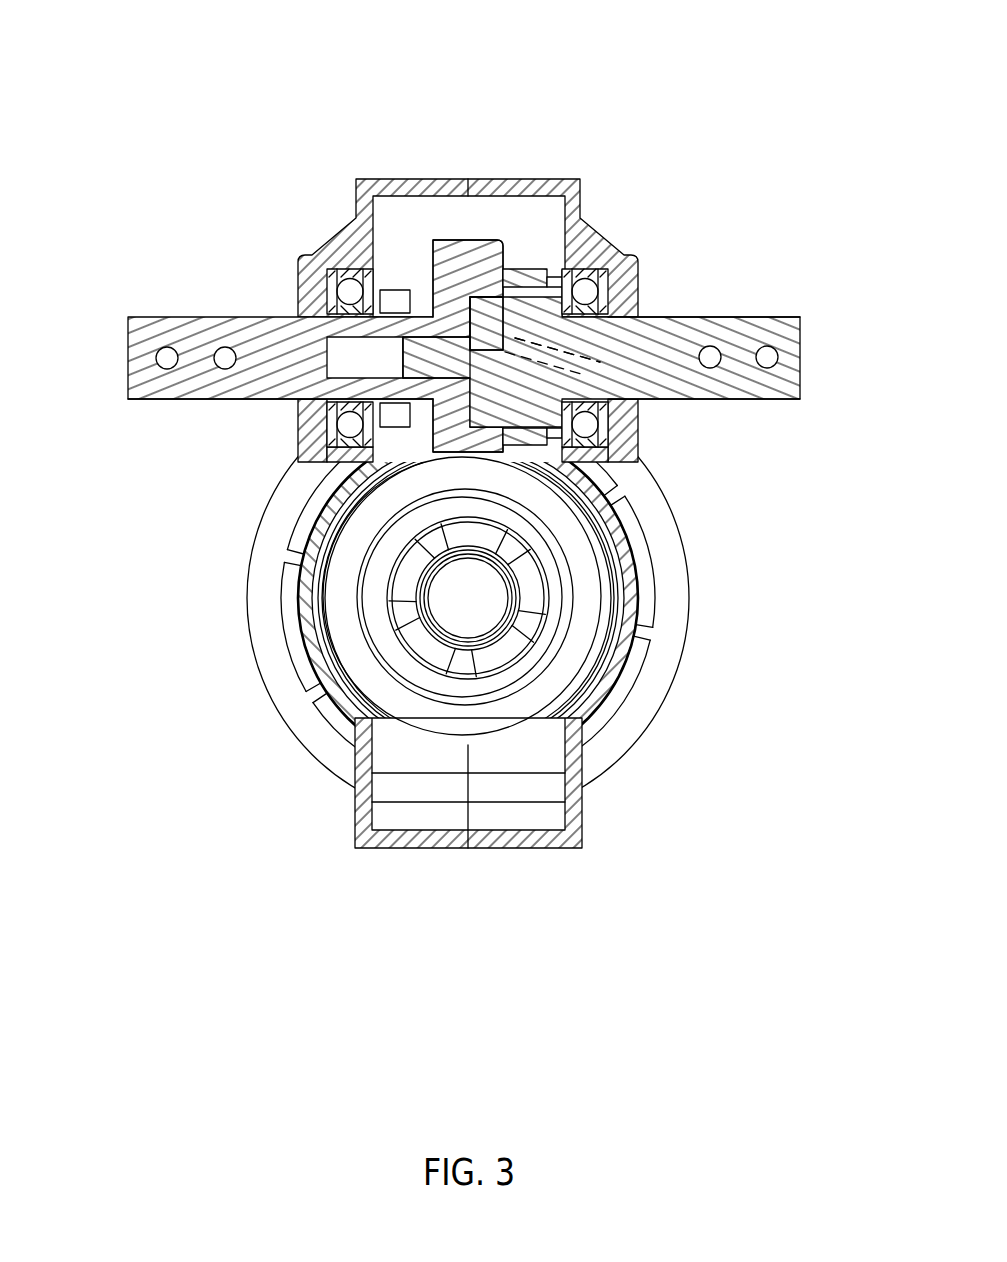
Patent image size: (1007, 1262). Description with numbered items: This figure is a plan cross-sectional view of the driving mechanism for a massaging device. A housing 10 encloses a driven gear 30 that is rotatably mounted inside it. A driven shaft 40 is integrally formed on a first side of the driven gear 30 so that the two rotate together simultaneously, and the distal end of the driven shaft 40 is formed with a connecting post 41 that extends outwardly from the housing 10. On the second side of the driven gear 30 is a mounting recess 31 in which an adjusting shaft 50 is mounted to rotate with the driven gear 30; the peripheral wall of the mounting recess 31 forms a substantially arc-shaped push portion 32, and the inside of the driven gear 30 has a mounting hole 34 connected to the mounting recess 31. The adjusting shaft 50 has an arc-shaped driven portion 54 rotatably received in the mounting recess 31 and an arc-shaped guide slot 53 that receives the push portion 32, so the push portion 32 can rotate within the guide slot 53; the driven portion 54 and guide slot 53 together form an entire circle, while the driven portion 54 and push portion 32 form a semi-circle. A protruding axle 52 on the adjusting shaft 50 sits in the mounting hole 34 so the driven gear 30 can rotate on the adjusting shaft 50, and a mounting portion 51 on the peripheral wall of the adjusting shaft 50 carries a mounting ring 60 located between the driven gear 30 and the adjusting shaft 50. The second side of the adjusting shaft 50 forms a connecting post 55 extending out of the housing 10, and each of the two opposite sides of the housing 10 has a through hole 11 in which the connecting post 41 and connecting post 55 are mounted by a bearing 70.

The housing 10 is at (336, 228).
The through hole 11 is at (313, 303).
The driven gear 30 is at (456, 242).
The mounting recess 31 is at (487, 300).
The push portion 32 is at (557, 350).
The mounting hole 34 is at (373, 353).
The driven shaft 40 is at (125, 347).
The connecting post 41 is at (207, 385).
The adjusting shaft 50 is at (810, 343).
The mounting portion 51 is at (540, 282).
The protruding axle 52 is at (445, 365).
The guide slot 53 is at (486, 323).
The driven portion 54 is at (620, 363).
The connecting post 55 is at (740, 330).
The mounting ring 60 is at (523, 268).
The bearing 70 is at (600, 264).